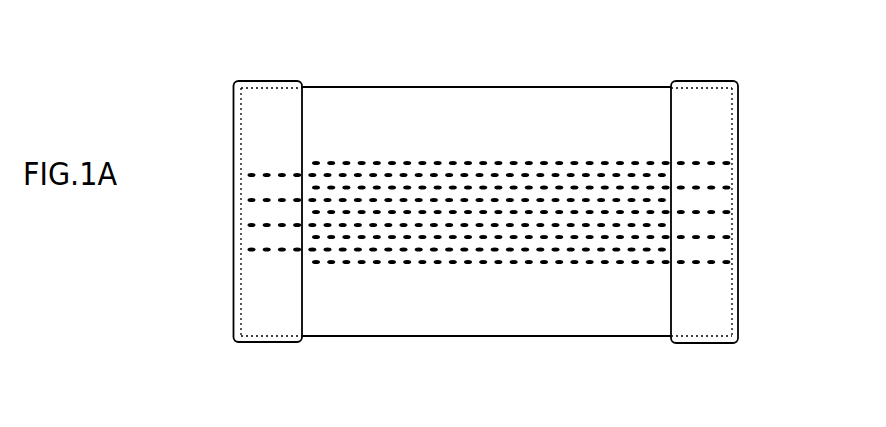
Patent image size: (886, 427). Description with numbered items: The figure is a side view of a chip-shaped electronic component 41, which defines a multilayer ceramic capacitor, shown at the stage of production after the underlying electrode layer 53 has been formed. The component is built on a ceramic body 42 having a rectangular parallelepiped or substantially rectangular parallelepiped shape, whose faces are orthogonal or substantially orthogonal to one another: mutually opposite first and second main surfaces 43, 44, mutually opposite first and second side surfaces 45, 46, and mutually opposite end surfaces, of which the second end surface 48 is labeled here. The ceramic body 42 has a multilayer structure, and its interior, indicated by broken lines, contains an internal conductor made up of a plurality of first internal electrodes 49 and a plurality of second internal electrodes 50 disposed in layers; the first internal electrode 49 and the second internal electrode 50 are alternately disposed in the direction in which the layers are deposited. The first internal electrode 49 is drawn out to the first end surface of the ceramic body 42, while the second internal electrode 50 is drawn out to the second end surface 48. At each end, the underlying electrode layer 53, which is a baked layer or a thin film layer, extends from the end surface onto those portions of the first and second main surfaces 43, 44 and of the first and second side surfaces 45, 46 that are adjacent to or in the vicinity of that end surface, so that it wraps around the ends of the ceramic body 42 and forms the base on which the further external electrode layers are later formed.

The chip-shaped electronic component 41 is at (235, 132).
The ceramic body 42 is at (472, 86).
The first main surface 43 is at (424, 87).
The second main surface 44 is at (480, 337).
The first side surface 45 is at (369, 113).
The second side surface 46 is at (529, 323).
The second end surface 48 is at (735, 144).
The first internal electrode 49 is at (543, 167).
The second internal electrode 50 is at (642, 237).
The underlying electrode layer 53 is at (275, 98).